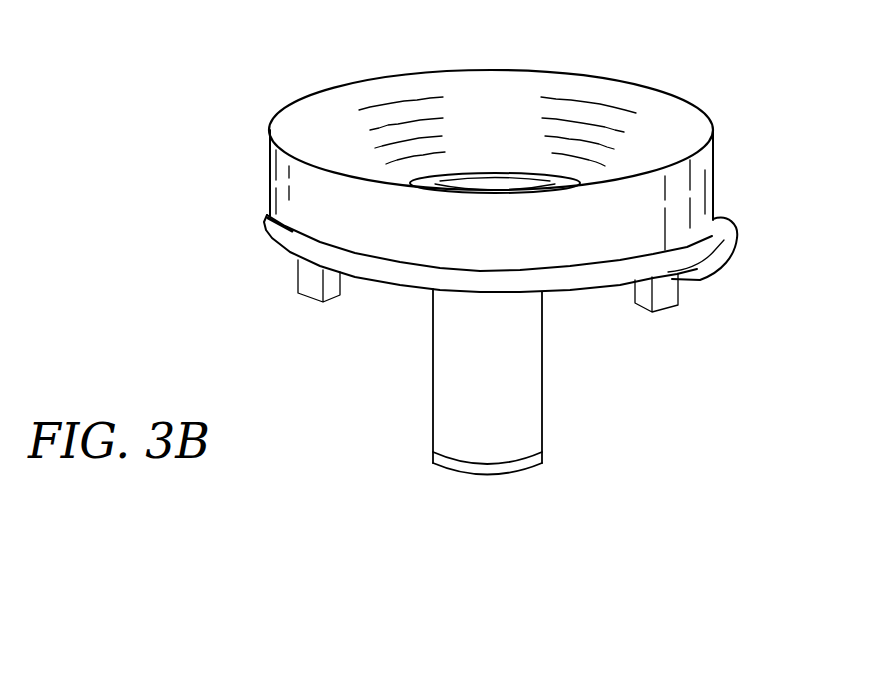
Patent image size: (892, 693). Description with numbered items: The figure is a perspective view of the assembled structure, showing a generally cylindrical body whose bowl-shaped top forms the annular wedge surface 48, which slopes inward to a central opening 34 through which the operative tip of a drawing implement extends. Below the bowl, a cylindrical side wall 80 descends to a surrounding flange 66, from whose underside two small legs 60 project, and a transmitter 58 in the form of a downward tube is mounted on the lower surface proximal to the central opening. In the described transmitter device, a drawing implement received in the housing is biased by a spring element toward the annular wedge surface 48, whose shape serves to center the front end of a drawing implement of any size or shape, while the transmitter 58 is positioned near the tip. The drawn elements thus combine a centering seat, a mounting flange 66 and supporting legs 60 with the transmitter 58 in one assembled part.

The central opening 34 is at (503, 172).
The annular wedge surface 48 is at (563, 118).
The transmitter 58 is at (524, 382).
The abutment surface 60 is at (317, 288).
The flange 66 is at (272, 237).
The side wall 80 is at (683, 198).